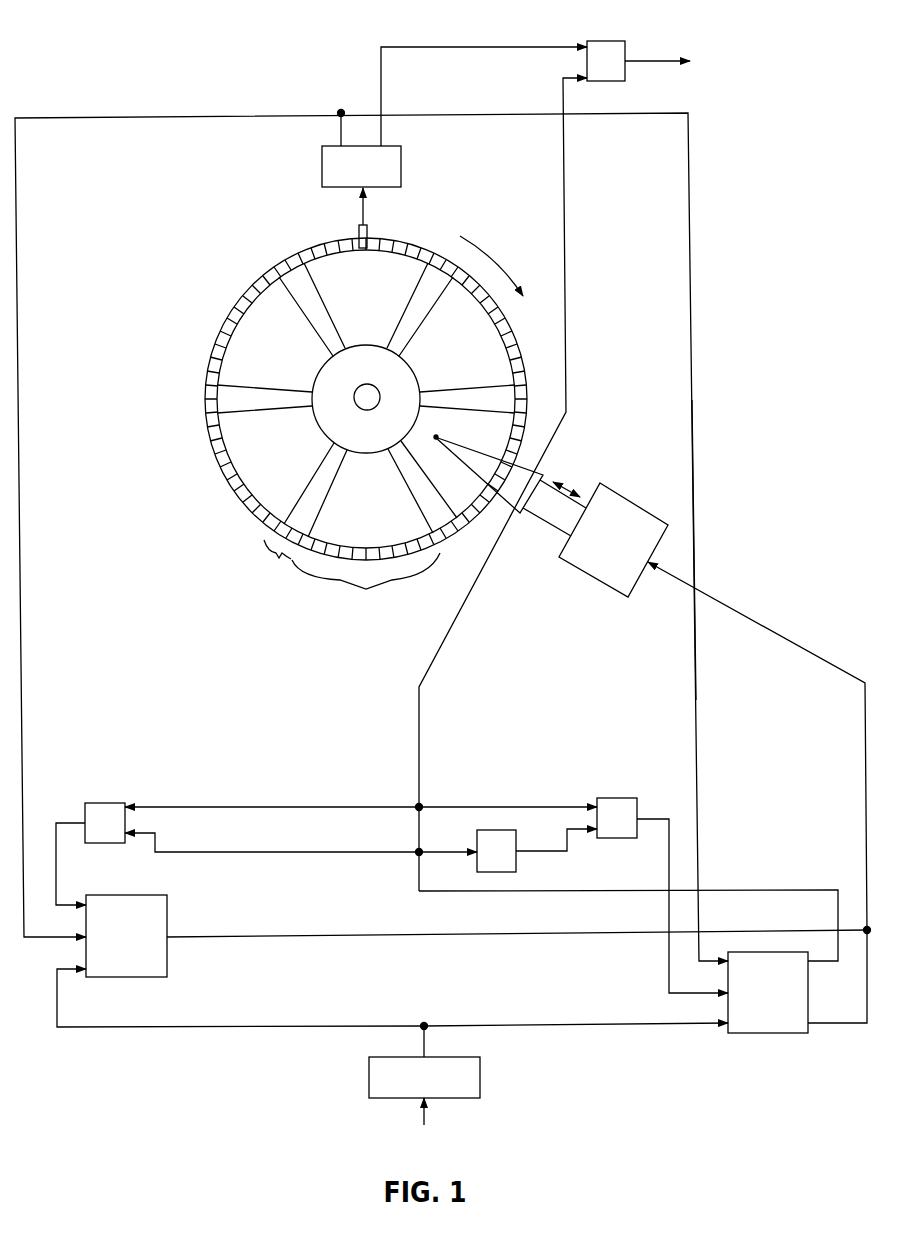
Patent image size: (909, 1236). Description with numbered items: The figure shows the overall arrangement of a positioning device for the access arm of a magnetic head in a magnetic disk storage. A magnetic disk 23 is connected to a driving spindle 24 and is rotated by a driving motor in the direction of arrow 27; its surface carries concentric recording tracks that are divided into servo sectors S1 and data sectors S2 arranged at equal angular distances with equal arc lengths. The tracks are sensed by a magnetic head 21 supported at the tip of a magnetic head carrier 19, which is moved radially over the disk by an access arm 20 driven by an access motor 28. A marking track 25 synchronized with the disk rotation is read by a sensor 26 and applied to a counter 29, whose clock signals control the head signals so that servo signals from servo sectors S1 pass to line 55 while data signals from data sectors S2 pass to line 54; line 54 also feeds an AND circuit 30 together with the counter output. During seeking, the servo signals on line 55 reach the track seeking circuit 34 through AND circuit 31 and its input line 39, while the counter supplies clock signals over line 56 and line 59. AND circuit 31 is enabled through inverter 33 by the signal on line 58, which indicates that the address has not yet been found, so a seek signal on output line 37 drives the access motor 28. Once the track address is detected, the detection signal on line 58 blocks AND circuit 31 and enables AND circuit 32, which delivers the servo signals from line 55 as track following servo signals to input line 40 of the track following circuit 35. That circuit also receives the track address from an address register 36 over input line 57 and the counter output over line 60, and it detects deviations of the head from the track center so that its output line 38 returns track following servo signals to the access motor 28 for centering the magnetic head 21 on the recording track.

The magnetic head carrier 19 is at (540, 477).
The access arm 20 is at (548, 513).
The magnetic head 21 is at (436, 437).
The magnetic disk 23 is at (240, 463).
The driving spindle 24 is at (375, 392).
The marking track 25 is at (255, 512).
The sensor 26 is at (370, 228).
The arrow 27 is at (486, 250).
The access motor 28 is at (630, 507).
The counter 29 is at (398, 175).
The AND gate 30 is at (616, 43).
The AND circuit 31 is at (633, 810).
The AND circuit 32 is at (107, 802).
The inverter 33 is at (515, 843).
The track seeking circuit 34 is at (772, 1030).
The track following circuit 35 is at (163, 915).
The address register 36 is at (475, 1080).
The output line 37 is at (868, 985).
The output line 38 is at (432, 938).
The input line 39 is at (670, 971).
The input line 40 is at (55, 870).
The line 54 is at (563, 223).
The line 55 is at (418, 740).
The line 56 is at (548, 1027).
The input line 57 is at (213, 1027).
The line 58 is at (747, 893).
The line 59 is at (688, 230).
The line 60 is at (155, 117).
The servo sectors S1 is at (269, 565).
The data sectors S2 is at (366, 587).